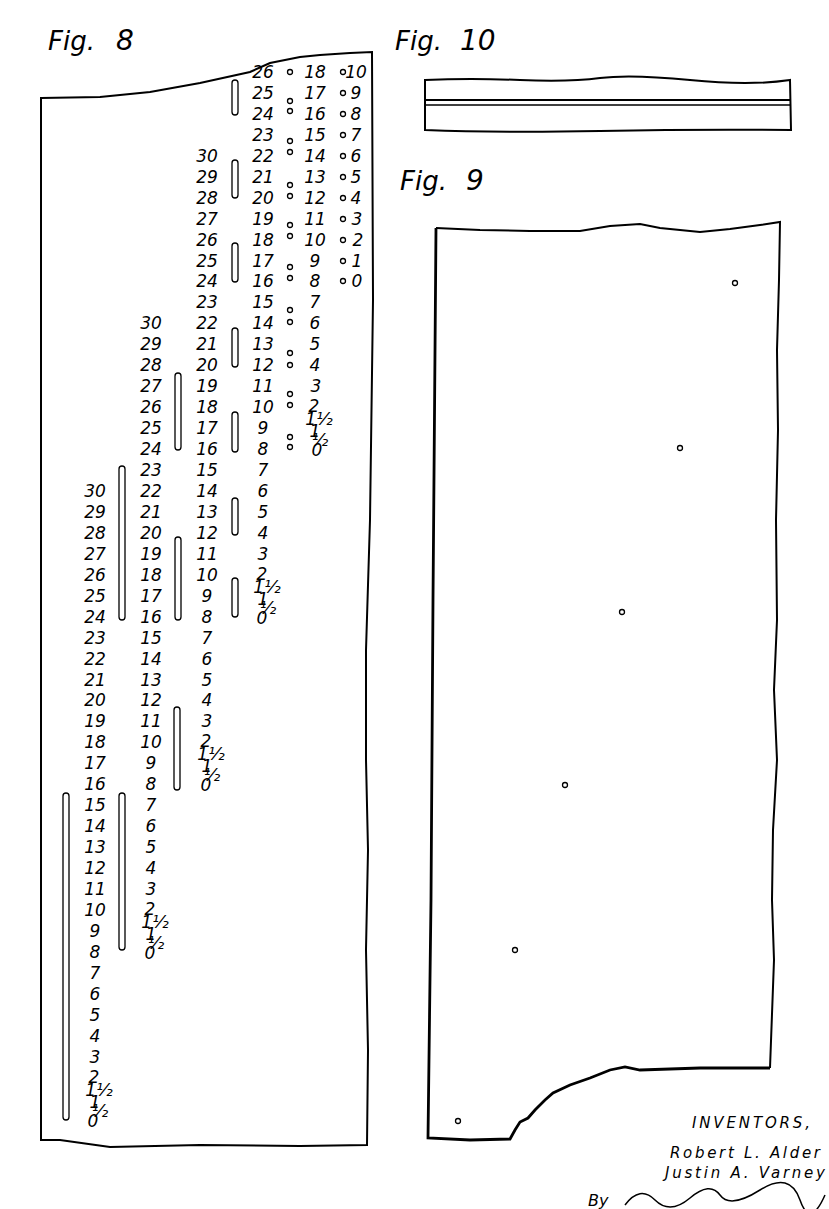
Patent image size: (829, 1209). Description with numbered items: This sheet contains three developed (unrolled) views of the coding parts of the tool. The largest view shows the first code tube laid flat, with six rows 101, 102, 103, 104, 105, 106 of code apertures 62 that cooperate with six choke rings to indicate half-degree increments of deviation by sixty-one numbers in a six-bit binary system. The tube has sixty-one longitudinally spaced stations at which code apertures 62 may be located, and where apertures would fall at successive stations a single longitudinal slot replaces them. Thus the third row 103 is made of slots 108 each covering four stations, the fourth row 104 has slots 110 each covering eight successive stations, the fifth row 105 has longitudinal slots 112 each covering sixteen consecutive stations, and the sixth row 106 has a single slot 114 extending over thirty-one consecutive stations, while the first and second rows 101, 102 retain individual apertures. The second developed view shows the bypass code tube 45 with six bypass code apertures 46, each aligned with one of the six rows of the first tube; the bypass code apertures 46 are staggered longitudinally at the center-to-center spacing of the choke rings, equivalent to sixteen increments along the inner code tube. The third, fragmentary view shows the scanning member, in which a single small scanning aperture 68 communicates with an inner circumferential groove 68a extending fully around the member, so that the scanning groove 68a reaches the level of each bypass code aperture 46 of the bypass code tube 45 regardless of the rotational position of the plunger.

In FIG. 9, the bypass code tube 45 is at (784, 680).
In FIG. 9, the bypass code apertures 46 is at (734, 286).
In FIG. 8, the code apertures 62 is at (345, 260).
In FIG. 10, the scanning aperture 68 is at (626, 103).
In FIG. 10, the inner circumferential groove 68a is at (738, 104).
In FIG. 8, the first row of code apertures 101 is at (341, 294).
In FIG. 8, the second row of code apertures 102 is at (289, 458).
In FIG. 8, the third row of code apertures 103 is at (282, 371).
In FIG. 8, the fourth row of code apertures 104 is at (222, 600).
In FIG. 8, the fifth row of code apertures 105 is at (123, 958).
In FIG. 8, the sixth row of code apertures 106 is at (115, 989).
In FIG. 8, the slots 108 is at (238, 582).
In FIG. 8, the slots 110 is at (181, 738).
In FIG. 8, the longitudinal slots 112 is at (167, 730).
In FIG. 8, the single slot 114 is at (70, 1070).